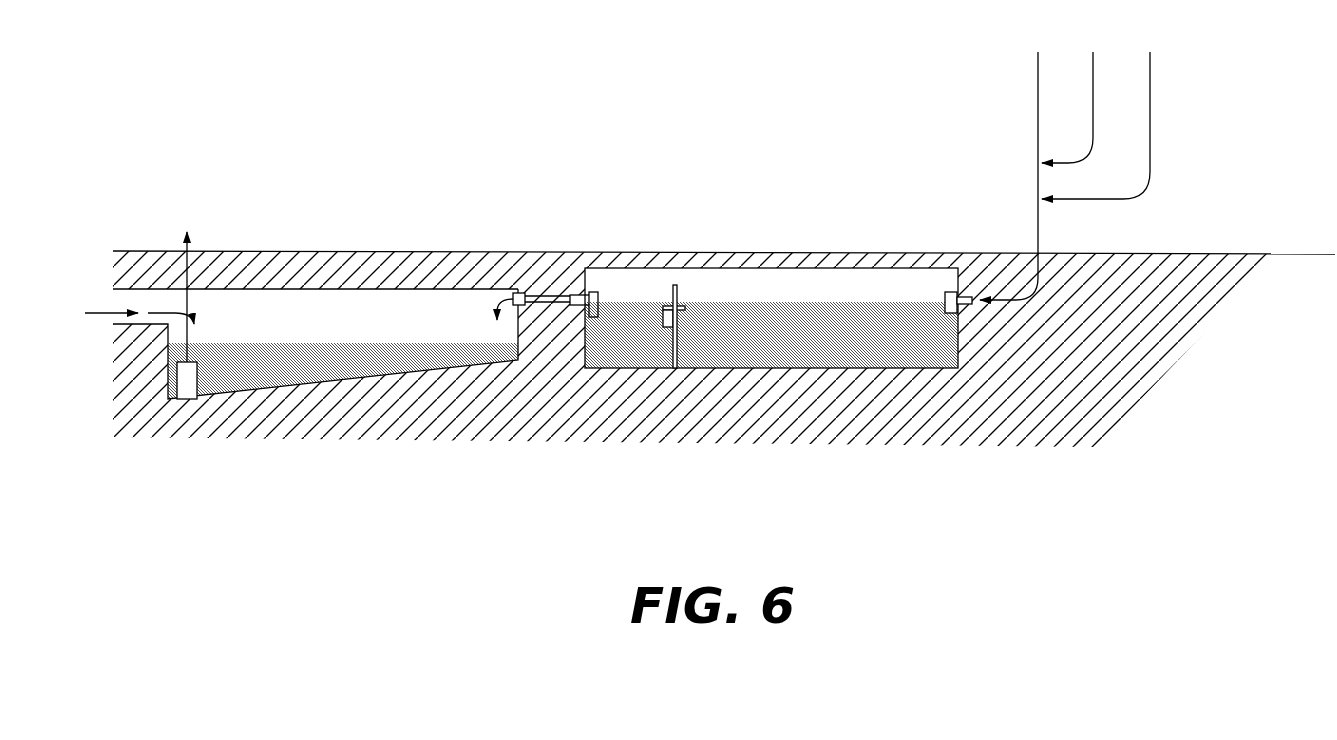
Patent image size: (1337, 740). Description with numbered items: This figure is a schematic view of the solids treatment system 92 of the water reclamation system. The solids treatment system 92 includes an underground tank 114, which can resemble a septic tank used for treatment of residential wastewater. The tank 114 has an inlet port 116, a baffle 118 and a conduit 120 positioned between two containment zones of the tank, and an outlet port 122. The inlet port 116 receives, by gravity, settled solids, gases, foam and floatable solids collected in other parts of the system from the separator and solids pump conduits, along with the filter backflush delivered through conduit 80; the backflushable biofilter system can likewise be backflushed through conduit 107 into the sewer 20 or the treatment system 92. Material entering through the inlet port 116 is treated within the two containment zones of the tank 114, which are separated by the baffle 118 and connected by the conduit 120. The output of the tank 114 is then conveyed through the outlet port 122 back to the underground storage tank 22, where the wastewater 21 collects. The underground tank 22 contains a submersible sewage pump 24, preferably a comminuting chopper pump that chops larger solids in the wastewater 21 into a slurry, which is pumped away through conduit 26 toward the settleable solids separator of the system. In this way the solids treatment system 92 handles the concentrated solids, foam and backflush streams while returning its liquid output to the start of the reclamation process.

The sewer 20 is at (130, 303).
The wastewater 21 is at (285, 385).
The underground storage tank 22 is at (390, 377).
The submersible sewage pump 24 is at (190, 400).
The conduit 26 is at (192, 238).
The solids treatment system 92 is at (546, 160).
The underground tank 114 is at (728, 258).
The inlet port 116 is at (950, 292).
The baffle 118 is at (675, 285).
The conduit 120 is at (660, 310).
The outlet port 122 is at (575, 292).
The conduit 80 is at (1095, 70).
The conduit 107 is at (1152, 82).